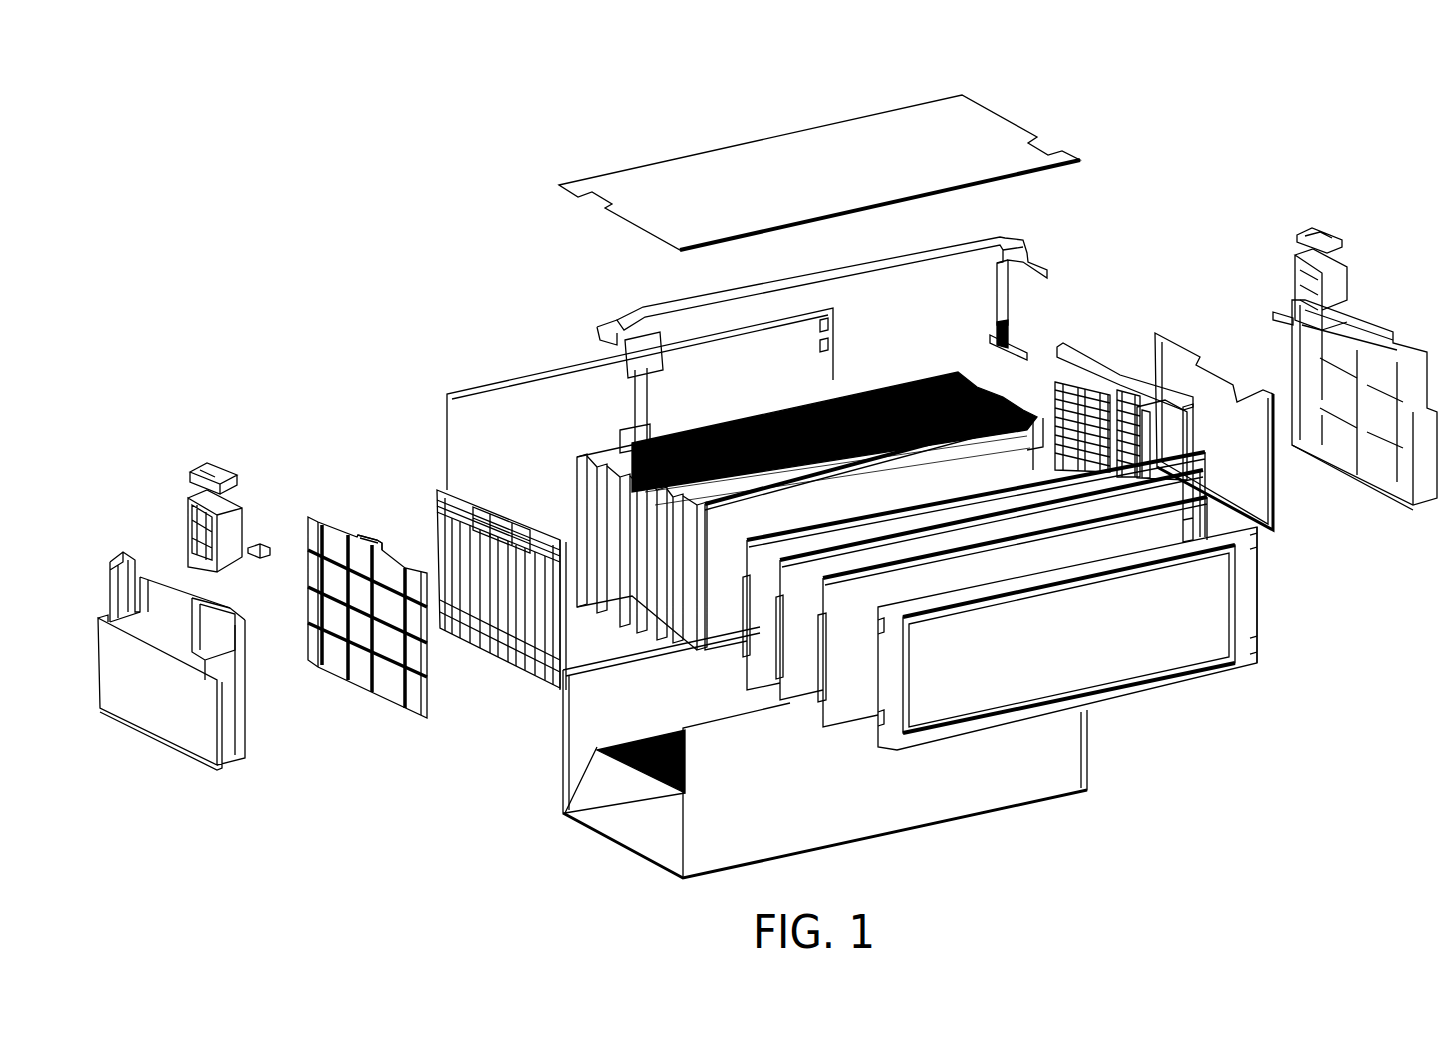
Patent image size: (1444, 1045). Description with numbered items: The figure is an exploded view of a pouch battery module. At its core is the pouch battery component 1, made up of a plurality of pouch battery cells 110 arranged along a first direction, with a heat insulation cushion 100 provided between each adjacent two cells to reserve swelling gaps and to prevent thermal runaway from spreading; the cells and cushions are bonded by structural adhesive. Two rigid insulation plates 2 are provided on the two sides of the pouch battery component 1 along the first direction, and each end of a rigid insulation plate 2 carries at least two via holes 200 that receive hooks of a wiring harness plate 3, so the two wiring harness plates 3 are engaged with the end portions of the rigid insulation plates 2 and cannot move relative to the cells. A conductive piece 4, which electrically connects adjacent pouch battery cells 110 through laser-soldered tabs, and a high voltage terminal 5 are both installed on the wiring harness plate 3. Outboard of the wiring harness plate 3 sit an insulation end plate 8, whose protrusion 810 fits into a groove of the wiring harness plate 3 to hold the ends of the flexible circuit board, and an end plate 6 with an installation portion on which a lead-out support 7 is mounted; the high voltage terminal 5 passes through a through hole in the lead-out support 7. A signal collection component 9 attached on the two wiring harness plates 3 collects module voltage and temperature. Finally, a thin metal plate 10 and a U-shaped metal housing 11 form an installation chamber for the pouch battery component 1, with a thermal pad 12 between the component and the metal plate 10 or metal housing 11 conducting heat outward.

The pouch battery component 1 is at (1258, 66).
The heat insulation cushion 100 is at (905, 483).
The pouch battery cell 110 is at (1010, 530).
The rigid insulation plate 2 is at (1137, 645).
The via hole 200 is at (1258, 665).
The wiring harness plate 3 is at (482, 490).
The conductive piece 4 is at (533, 510).
The high voltage terminal 5 is at (438, 490).
The end plate 6 is at (120, 548).
The lead-out support 7 is at (193, 480).
The insulation end plate 8 is at (312, 518).
The protrusion 810 is at (368, 538).
The signal collection component 9 is at (1022, 238).
The metal plate 10 is at (877, 165).
The metal housing 11 is at (757, 762).
The thermal pad 12 is at (633, 770).